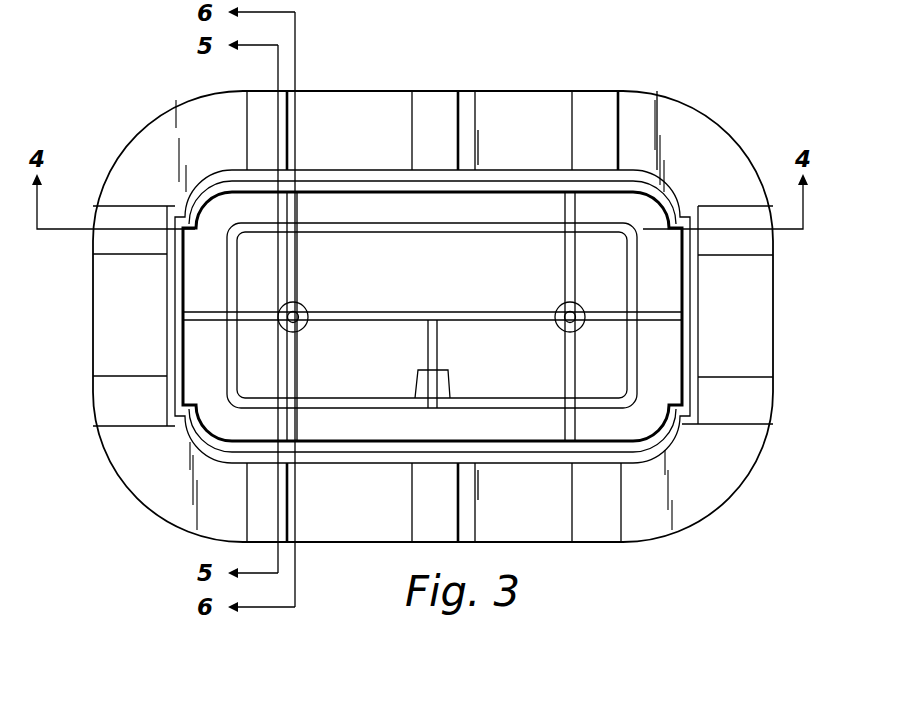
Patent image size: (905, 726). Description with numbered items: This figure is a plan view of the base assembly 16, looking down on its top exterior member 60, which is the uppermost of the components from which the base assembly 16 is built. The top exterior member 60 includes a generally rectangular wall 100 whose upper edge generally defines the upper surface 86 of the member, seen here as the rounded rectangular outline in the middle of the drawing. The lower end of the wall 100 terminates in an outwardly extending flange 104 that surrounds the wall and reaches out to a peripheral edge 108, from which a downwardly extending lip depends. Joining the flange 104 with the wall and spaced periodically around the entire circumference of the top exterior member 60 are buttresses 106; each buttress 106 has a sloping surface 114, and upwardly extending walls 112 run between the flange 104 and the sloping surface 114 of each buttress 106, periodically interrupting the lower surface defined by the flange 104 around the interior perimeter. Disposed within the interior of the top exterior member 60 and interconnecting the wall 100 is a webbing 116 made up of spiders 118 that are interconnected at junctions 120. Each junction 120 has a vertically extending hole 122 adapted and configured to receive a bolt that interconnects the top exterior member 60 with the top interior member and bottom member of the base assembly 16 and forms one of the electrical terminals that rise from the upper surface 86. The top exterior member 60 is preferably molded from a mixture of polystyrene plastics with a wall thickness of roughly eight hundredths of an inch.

The base assembly 16 is at (418, 288).
The top exterior member 60 is at (704, 146).
The upper surface 86 is at (659, 206).
The wall 100 is at (502, 180).
The flange 104 is at (490, 107).
The buttresses 106 is at (431, 123).
The peripheral edge 108 is at (331, 91).
The upwardly extending walls 112 is at (411, 138).
The sloping surface 114 is at (449, 154).
The webbing 116 is at (368, 312).
The spiders 118 is at (291, 261).
The junctions 120 is at (304, 304).
The hole 122 is at (299, 316).